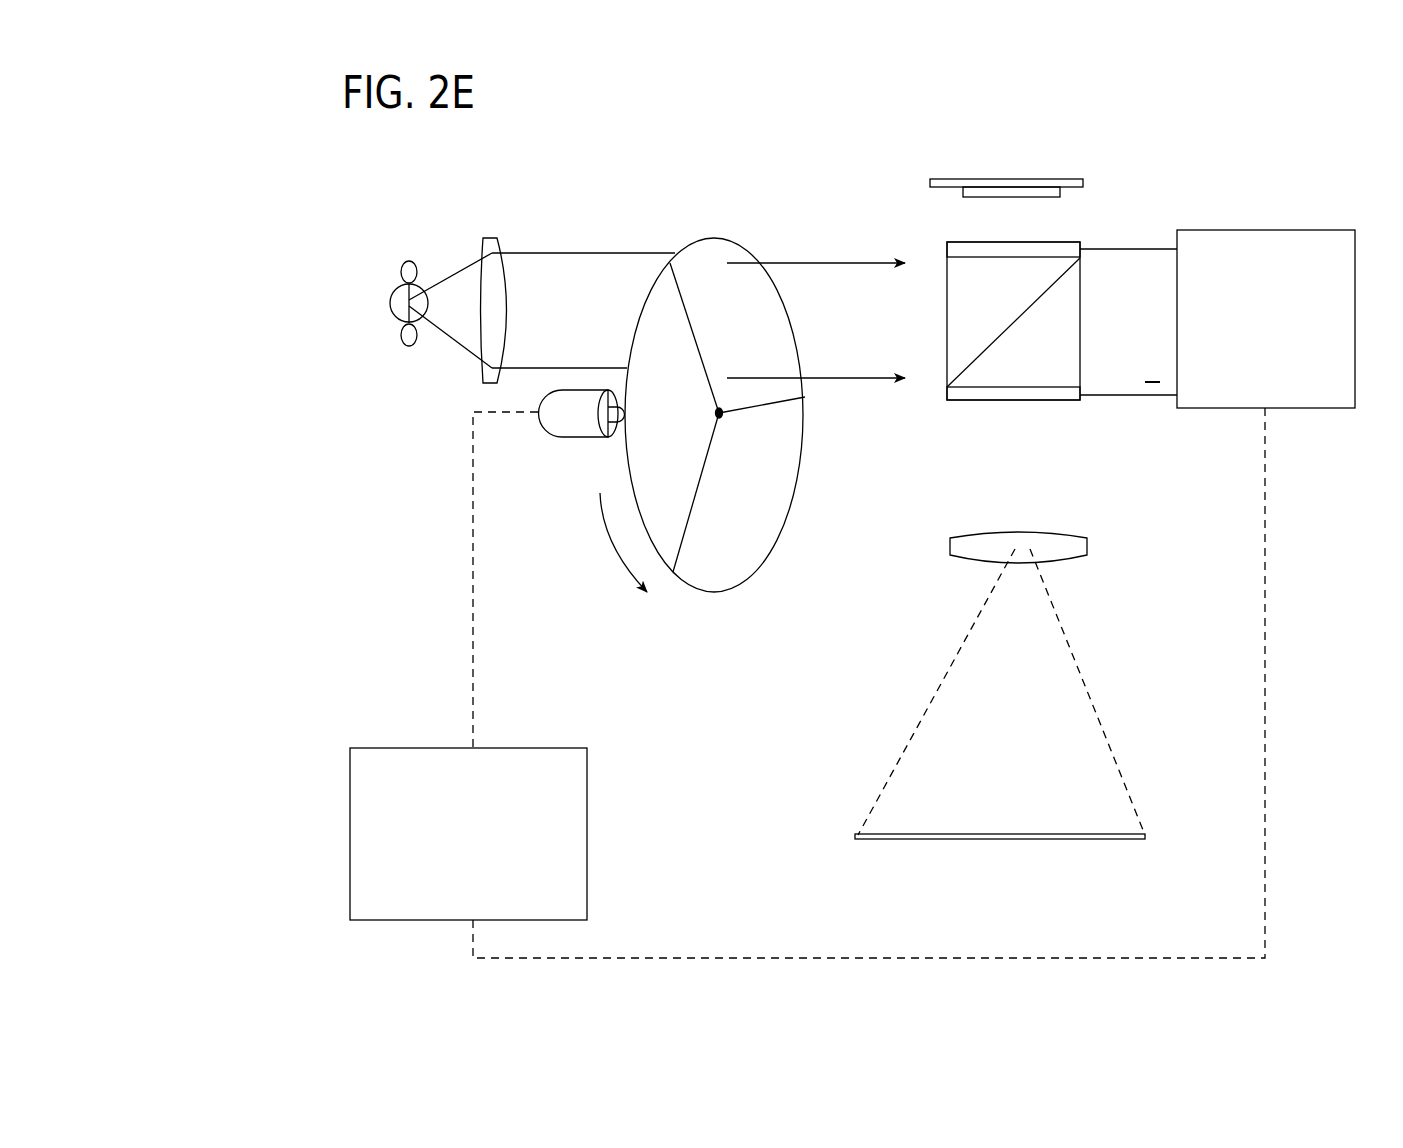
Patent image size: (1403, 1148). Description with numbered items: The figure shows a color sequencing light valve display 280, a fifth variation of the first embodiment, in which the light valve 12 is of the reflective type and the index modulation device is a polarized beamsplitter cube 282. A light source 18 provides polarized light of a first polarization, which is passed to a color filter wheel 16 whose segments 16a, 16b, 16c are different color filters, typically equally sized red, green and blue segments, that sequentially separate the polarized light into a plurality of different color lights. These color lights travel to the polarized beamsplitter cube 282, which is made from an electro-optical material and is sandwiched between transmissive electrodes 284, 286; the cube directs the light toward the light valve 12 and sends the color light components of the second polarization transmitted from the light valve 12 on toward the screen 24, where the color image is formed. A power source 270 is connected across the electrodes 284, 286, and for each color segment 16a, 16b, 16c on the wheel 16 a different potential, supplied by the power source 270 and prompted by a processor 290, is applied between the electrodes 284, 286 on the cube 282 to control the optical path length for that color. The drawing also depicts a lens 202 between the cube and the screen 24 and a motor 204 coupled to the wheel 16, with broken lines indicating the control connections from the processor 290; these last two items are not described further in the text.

The light valve 12 is at (1040, 180).
The color filter wheel 16 is at (714, 408).
The red segment 16a is at (717, 252).
The green segment 16b is at (783, 472).
The blue segment 16c is at (667, 302).
The light source 18 is at (399, 297).
The screen 24 is at (858, 836).
The projection lens 202 is at (1080, 560).
The motor 204 is at (560, 438).
The power source 270 is at (1268, 230).
The display 280 is at (1094, 268).
The polarized beamsplitter cube 282 is at (947, 369).
The transmissive electrode 284 is at (953, 245).
The transmissive electrode 286 is at (1027, 393).
The processor 290 is at (373, 747).